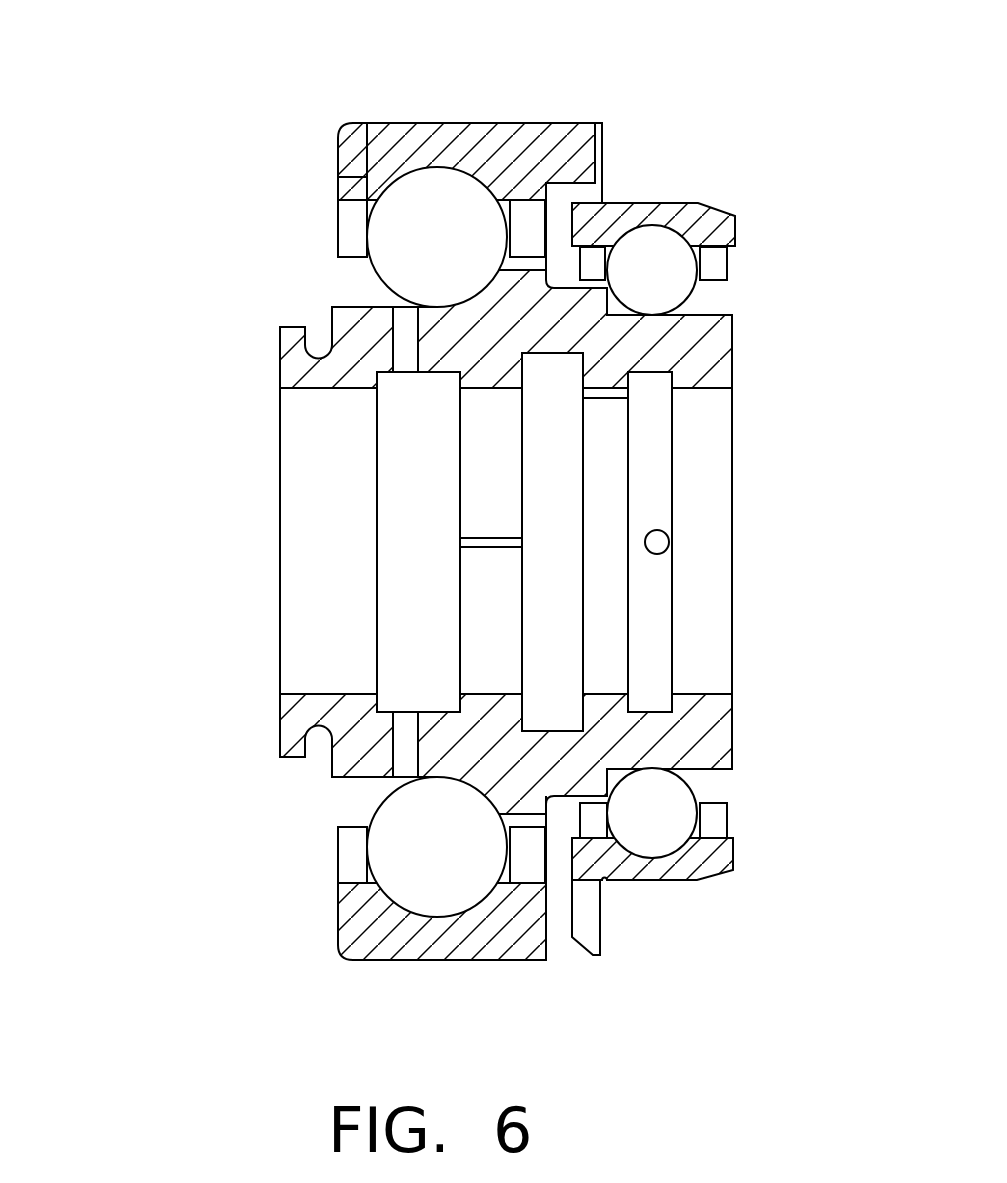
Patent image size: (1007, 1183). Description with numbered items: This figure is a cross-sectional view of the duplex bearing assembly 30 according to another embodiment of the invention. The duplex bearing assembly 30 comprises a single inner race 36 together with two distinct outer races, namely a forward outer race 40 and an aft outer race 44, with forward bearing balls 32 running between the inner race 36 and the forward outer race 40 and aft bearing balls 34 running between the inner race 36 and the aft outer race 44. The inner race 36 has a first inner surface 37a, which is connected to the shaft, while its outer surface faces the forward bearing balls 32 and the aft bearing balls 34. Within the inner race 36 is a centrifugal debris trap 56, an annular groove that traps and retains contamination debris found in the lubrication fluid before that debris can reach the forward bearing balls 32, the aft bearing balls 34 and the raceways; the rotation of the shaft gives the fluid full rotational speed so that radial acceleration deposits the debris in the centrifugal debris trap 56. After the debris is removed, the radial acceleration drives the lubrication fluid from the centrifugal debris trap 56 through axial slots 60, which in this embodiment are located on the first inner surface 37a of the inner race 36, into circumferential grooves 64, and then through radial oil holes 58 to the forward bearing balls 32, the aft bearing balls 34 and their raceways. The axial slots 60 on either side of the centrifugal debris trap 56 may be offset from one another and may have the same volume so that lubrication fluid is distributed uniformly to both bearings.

The duplex bearing assembly 30 is at (178, 90).
The forward bearing balls 32 is at (462, 253).
The aft bearing balls 34 is at (677, 287).
The inner race 36 is at (280, 608).
The first inner surface 37a is at (480, 453).
The forward outer race 40 is at (512, 135).
The aft outer race 44 is at (668, 213).
The centrifugal debris trap 56 is at (558, 637).
The radial oil holes 58 is at (408, 329).
The axial slots 60 is at (490, 540).
The circumferential grooves 64 is at (405, 590).